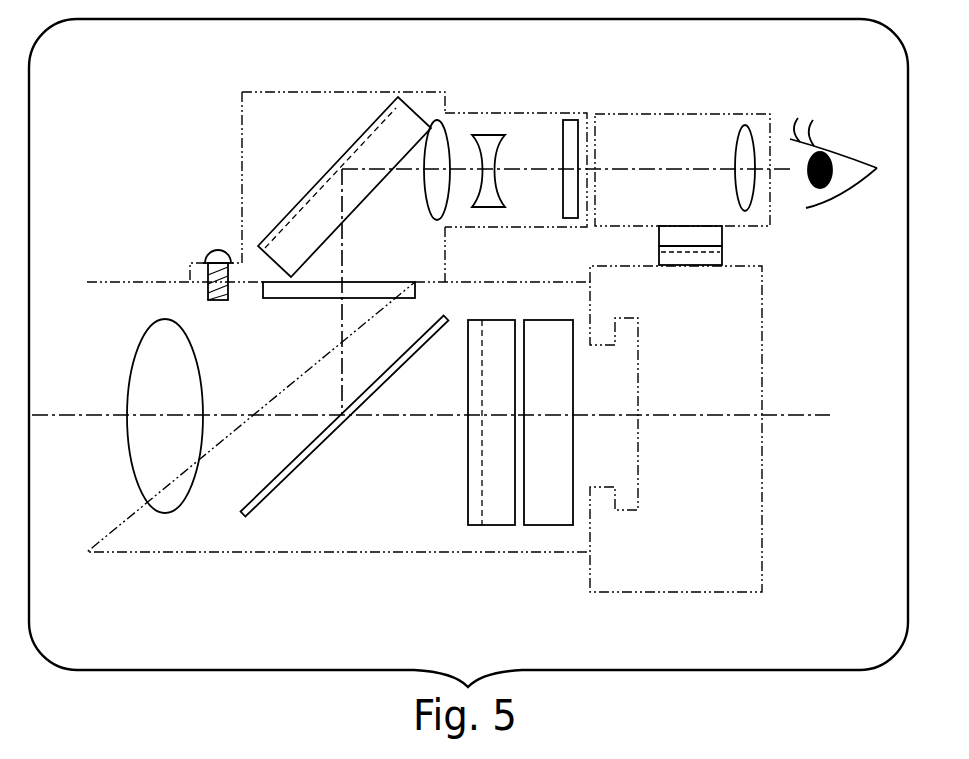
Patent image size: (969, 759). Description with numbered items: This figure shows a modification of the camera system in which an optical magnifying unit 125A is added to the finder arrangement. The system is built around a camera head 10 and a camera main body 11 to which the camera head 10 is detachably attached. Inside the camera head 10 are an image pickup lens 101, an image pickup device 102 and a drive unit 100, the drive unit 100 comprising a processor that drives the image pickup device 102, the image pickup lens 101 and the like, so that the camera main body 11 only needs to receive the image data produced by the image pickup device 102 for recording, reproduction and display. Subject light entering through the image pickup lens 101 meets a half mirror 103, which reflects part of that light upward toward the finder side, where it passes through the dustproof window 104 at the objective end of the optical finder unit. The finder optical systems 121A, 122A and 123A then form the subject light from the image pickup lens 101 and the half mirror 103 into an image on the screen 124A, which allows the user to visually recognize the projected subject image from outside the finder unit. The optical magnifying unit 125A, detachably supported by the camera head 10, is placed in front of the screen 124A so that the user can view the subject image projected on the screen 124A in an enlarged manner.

The camera head 10 is at (281, 553).
The camera main body 11 is at (690, 592).
The drive unit 100 is at (550, 525).
The image pickup lens 101 is at (185, 482).
The image pickup device 102 is at (495, 525).
The half mirror 103 is at (280, 485).
The dustproof window 104 is at (378, 289).
The finder optical system 121A is at (352, 220).
The finder optical system 122A is at (436, 193).
The finder optical system 123A is at (493, 192).
The screen 124A is at (565, 131).
The optical magnifying unit 125A is at (647, 113).